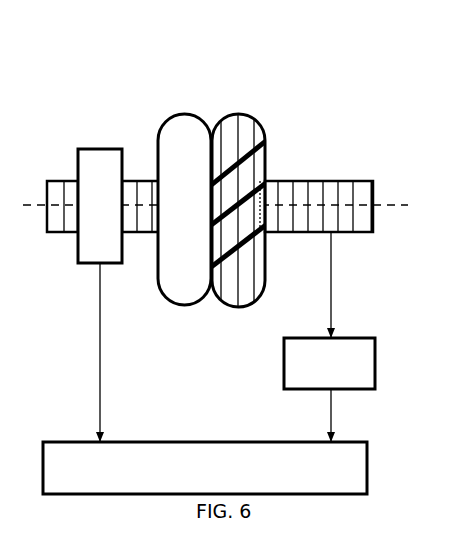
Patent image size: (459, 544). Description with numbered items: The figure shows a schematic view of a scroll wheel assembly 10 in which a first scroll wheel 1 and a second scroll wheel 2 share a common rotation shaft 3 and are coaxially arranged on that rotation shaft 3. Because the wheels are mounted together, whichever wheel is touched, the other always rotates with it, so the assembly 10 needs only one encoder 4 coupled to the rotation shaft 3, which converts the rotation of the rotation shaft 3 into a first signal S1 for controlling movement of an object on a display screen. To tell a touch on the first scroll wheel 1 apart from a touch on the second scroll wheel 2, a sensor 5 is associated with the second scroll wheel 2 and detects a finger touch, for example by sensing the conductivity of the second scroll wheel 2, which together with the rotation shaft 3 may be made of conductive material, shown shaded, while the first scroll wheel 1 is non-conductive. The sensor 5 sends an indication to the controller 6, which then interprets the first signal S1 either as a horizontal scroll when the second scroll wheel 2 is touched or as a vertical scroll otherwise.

The scroll wheel assembly 10 is at (110, 59).
The first scroll wheel 1 is at (186, 113).
The second scroll wheel 2 is at (255, 107).
The rotation shaft 3 is at (315, 180).
The encoder 4 is at (91, 147).
The sensor 5 is at (355, 342).
The controller 6 is at (211, 445).
The first signal S1 is at (101, 396).